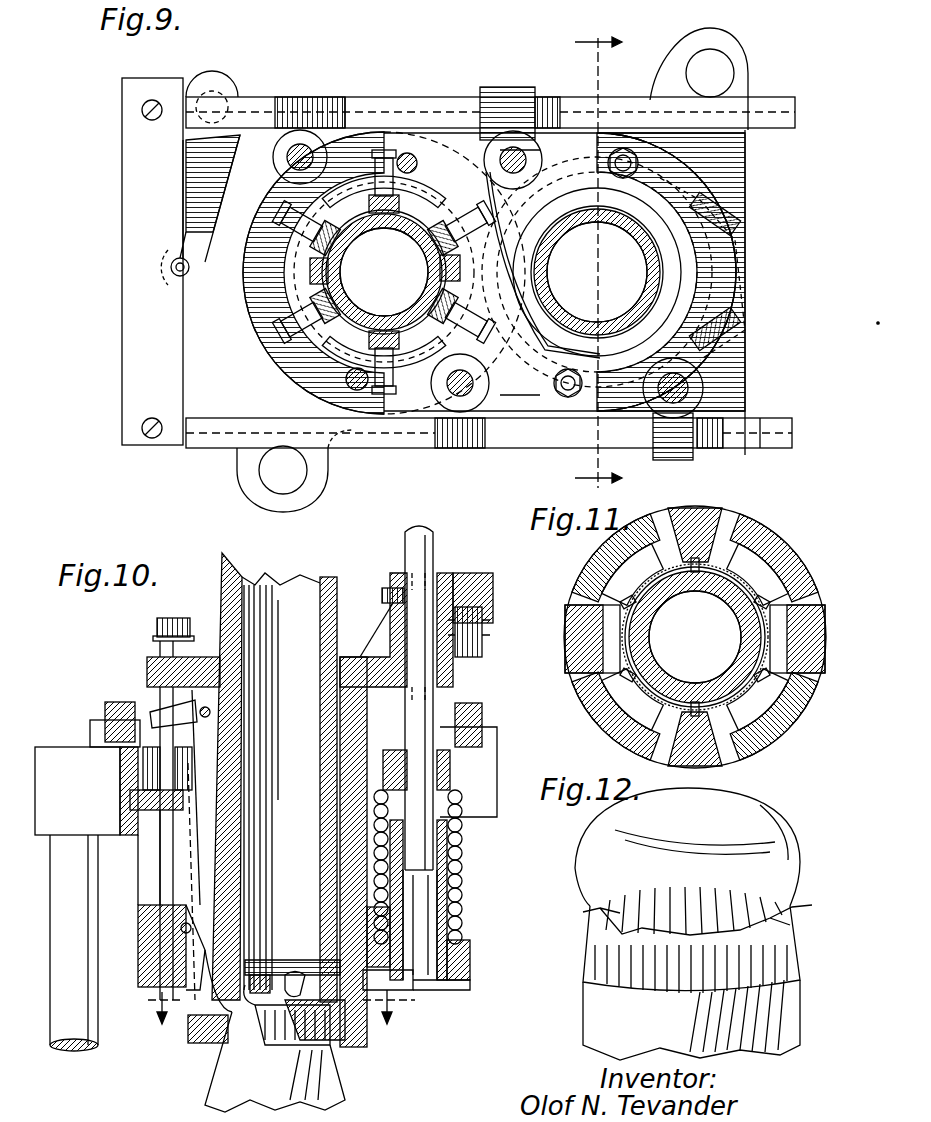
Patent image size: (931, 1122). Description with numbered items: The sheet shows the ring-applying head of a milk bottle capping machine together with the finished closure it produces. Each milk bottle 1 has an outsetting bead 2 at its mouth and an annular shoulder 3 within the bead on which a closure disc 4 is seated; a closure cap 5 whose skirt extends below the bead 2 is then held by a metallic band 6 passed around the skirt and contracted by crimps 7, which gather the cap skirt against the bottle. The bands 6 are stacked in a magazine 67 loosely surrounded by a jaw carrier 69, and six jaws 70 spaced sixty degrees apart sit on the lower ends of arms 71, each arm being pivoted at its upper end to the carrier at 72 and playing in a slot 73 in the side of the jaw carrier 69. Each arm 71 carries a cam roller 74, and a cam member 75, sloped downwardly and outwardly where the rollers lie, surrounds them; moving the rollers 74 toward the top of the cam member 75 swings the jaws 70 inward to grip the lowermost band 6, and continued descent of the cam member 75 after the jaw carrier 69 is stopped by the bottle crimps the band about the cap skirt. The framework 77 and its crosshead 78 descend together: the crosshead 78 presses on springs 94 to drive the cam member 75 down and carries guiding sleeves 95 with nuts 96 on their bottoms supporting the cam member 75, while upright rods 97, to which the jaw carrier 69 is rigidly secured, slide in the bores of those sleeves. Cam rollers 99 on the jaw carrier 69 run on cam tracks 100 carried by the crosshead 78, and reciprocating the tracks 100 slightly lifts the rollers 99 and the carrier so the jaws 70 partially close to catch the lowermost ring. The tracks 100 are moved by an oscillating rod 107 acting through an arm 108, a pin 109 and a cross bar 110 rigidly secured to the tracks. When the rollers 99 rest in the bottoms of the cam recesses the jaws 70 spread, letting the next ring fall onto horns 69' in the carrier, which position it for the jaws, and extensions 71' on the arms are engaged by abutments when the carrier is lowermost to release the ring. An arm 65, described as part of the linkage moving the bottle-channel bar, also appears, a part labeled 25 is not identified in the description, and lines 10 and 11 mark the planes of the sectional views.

In FIG. 10, the milk bottle 1 is at (235, 1086).
In FIG. 12, the milk bottle 1 is at (610, 997).
In FIG. 10, the outsetting bead 2 is at (215, 1000).
In FIG. 10, the annular shoulder 3 is at (258, 1000).
In FIG. 10, the closure disc 4 is at (272, 975).
In FIG. 10, the closure cap 5 is at (262, 960).
In FIG. 11, the closure cap 5 is at (735, 585).
In FIG. 12, the closure cap 5 is at (600, 868).
In FIG. 9, the metallic band 6 is at (420, 305).
In FIG. 10, the metallic band 6 is at (300, 1045).
In FIG. 11, the metallic band 6 is at (630, 640).
In FIG. 12, the metallic band 6 is at (600, 936).
In FIG. 10, the crimps 7 is at (299, 983).
In FIG. 11, the crimps 7 is at (625, 600).
In FIG. 12, the crimps 7 is at (605, 910).
In FIG. 9, the section line 10— 10 is at (598, 259).
In FIG. 10, the section line 11— 11 is at (278, 1003).
In FIG. 10, the collar 25 is at (464, 950).
In FIG. 9, the arm 65 is at (548, 345).
In FIG. 9, the magazine 67 is at (365, 225).
In FIG. 9, the jaw carrier 69 is at (500, 272).
In FIG. 10, the jaw carrier 69 is at (352, 805).
In FIG. 10, the horns 69' is at (328, 1043).
In FIG. 11, the horns 69' is at (695, 637).
In FIG. 10, the jaws 70 is at (210, 1040).
In FIG. 11, the jaws 70 is at (745, 560).
In FIG. 9, the arm 71 is at (491, 272).
In FIG. 10, the arm 71 is at (160, 843).
In FIG. 11, the arm 71 is at (704, 645).
In FIG. 9, the extensions 71' is at (530, 283).
In FIG. 10, the extensions 71' is at (141, 700).
In FIG. 9, the pivot 72 is at (312, 275).
In FIG. 10, the pivot 72 is at (175, 690).
In FIG. 10, the slot 73 is at (205, 995).
In FIG. 10, the cam roller 74 is at (160, 945).
In FIG. 10, the cam member 75 is at (145, 918).
In FIG. 9, the framework 77 is at (712, 73).
In FIG. 9, the crosshead 78 is at (250, 368).
In FIG. 10, the crosshead 78 is at (500, 767).
In FIG. 10, the springs 94 is at (462, 842).
In FIG. 10, the guiding sleeves 95 is at (425, 970).
In FIG. 10, the nuts 96 is at (470, 975).
In FIG. 9, the upright rods 97 is at (302, 150).
In FIG. 10, the upright rods 97 is at (433, 548).
In FIG. 9, the cam rollers 99 is at (540, 112).
In FIG. 10, the cam rollers 99 is at (470, 655).
In FIG. 9, the cam tracks 100 is at (792, 112).
In FIG. 10, the cam tracks 100 is at (105, 710).
In FIG. 9, the rod 107 is at (215, 100).
In FIG. 9, the arm 108 is at (183, 190).
In FIG. 9, the pin 109 is at (171, 266).
In FIG. 9, the cross bar 110 is at (130, 297).